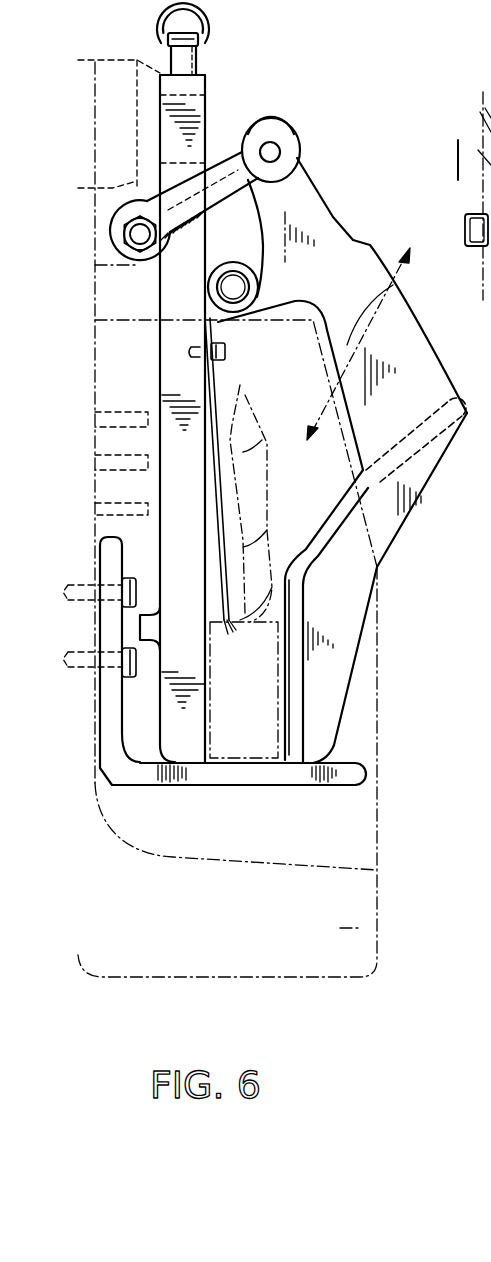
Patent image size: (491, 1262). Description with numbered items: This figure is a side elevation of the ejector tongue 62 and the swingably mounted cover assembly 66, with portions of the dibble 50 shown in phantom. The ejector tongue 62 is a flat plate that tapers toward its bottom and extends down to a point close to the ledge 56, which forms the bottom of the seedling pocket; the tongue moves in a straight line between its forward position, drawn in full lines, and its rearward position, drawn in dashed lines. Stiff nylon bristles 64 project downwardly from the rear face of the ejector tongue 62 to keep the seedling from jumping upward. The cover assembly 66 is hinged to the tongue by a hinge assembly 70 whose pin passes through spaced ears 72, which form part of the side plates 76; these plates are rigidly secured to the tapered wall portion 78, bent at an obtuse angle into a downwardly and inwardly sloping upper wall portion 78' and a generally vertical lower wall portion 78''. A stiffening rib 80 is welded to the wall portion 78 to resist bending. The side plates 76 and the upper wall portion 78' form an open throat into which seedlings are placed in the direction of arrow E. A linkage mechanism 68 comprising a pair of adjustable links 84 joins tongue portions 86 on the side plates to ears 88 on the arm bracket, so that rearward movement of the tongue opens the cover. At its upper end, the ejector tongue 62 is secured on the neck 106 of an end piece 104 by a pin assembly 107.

The dibble 50 is at (364, 928).
The ledge 56 is at (343, 773).
The ejector tongue 62 is at (178, 487).
The nylon bristles 64 is at (213, 402).
The cover assembly 66 is at (458, 529).
The linkage mechanism 68 is at (214, 207).
The hinge assembly 70 is at (233, 297).
The ears 72 is at (278, 297).
The side plates 76 is at (345, 254).
The wall portion 78 is at (349, 470).
The upper wall portion 78' is at (416, 398).
The lower wall portion 78'' is at (349, 671).
The stiffening rib 80 is at (388, 535).
The links 84 is at (137, 193).
The tongue portions 86 is at (300, 181).
The ear 88 is at (107, 241).
The end piece 104 is at (135, 60).
The neck 106 is at (207, 96).
The pin assembly 107 is at (199, 53).
The arrow E is at (414, 310).